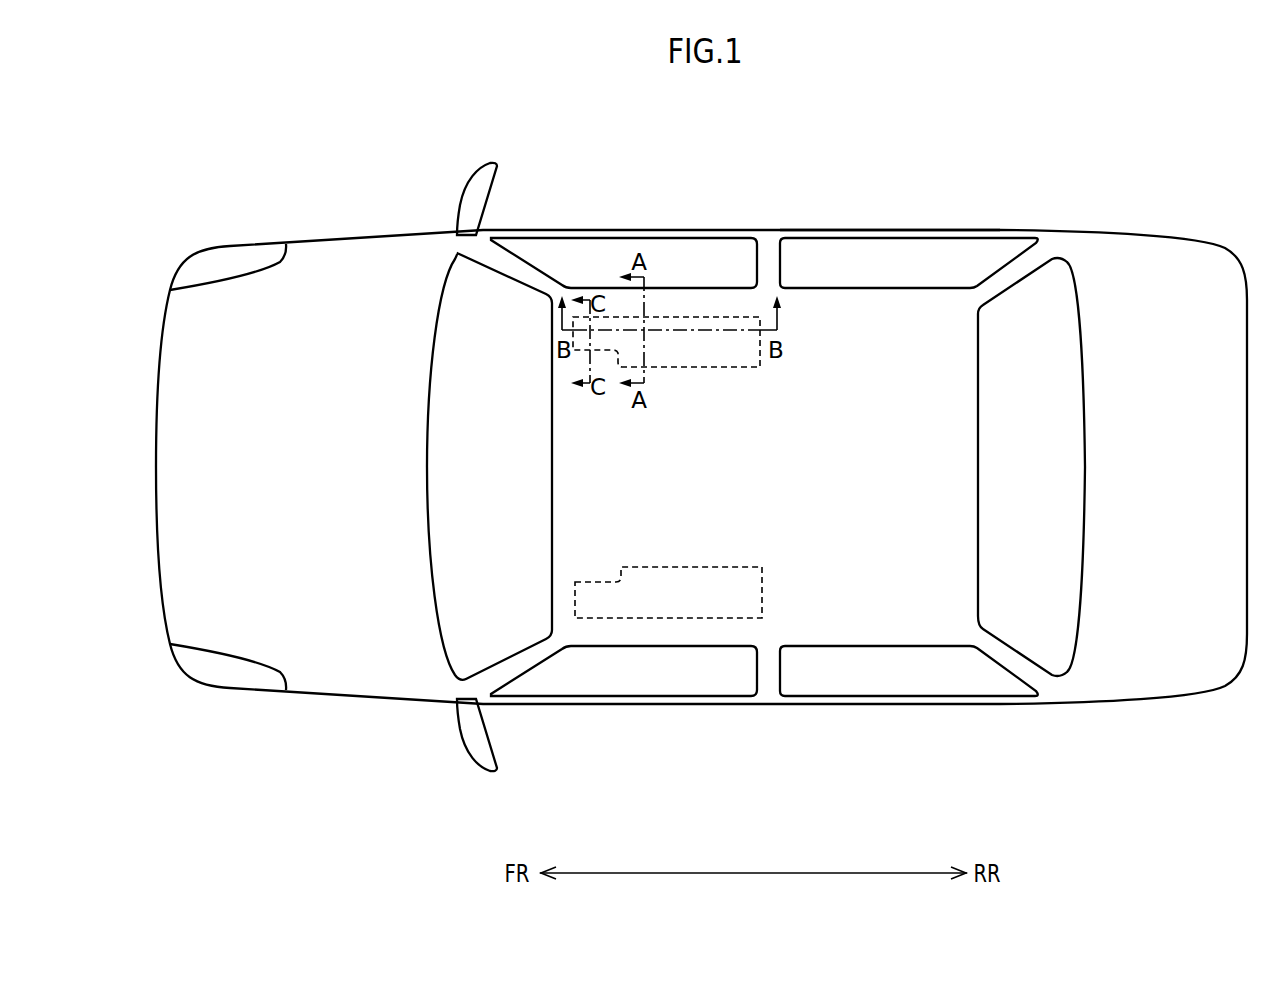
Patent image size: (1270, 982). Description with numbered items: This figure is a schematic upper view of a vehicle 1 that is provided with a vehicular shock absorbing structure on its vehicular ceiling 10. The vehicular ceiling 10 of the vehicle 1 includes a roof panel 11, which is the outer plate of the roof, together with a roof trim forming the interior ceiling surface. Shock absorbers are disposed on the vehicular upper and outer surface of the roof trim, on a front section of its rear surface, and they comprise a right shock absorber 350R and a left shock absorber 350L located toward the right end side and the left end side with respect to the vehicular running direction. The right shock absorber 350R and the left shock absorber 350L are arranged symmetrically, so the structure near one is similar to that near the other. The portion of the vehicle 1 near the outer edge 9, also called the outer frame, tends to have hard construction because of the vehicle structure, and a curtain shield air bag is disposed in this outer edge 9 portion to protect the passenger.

The vehicle 1 is at (1118, 126).
The outer edge 9 is at (809, 296).
The vehicular ceiling 10 is at (860, 323).
The roof panel 11 is at (922, 323).
The right shock absorber 350R is at (700, 348).
The left shock absorber 350L is at (693, 590).